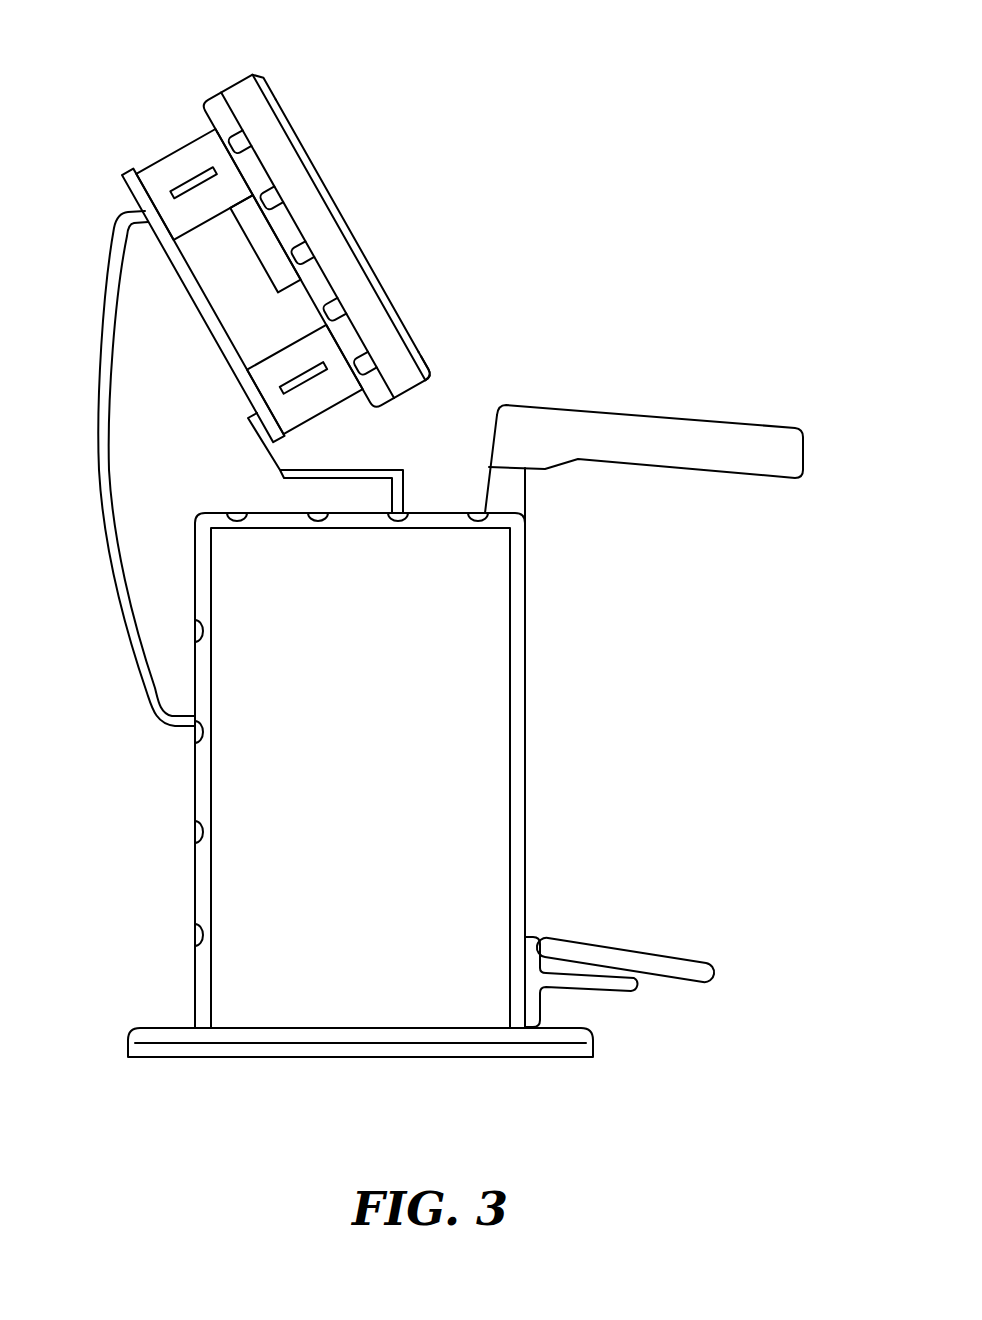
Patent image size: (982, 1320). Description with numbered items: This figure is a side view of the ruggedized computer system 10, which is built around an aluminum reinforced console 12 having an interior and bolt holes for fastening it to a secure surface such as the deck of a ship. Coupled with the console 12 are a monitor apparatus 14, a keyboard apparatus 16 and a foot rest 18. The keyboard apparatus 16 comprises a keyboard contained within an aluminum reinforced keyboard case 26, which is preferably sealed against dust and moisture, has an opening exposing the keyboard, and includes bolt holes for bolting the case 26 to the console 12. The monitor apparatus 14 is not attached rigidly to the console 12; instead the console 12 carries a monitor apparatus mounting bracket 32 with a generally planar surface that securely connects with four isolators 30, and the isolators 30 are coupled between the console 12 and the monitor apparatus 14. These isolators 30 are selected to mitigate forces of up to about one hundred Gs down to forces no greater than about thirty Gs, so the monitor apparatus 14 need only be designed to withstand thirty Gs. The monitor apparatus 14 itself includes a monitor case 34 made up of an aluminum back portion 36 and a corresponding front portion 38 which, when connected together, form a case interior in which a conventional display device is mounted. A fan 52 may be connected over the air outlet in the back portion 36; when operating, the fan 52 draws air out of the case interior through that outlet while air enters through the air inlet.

The computer system 10 is at (576, 174).
The console 12 is at (196, 798).
The monitor apparatus 14 is at (270, 68).
The keyboard apparatus 16 is at (814, 430).
The foot rest 18 is at (630, 955).
The keyboard case 26 is at (680, 445).
The isolators 30 is at (160, 163).
The monitor apparatus mounting bracket 32 is at (126, 193).
The monitor case 34 is at (253, 64).
The back portion 36 is at (437, 402).
The front portion 38 is at (432, 403).
The fan 52 is at (243, 238).